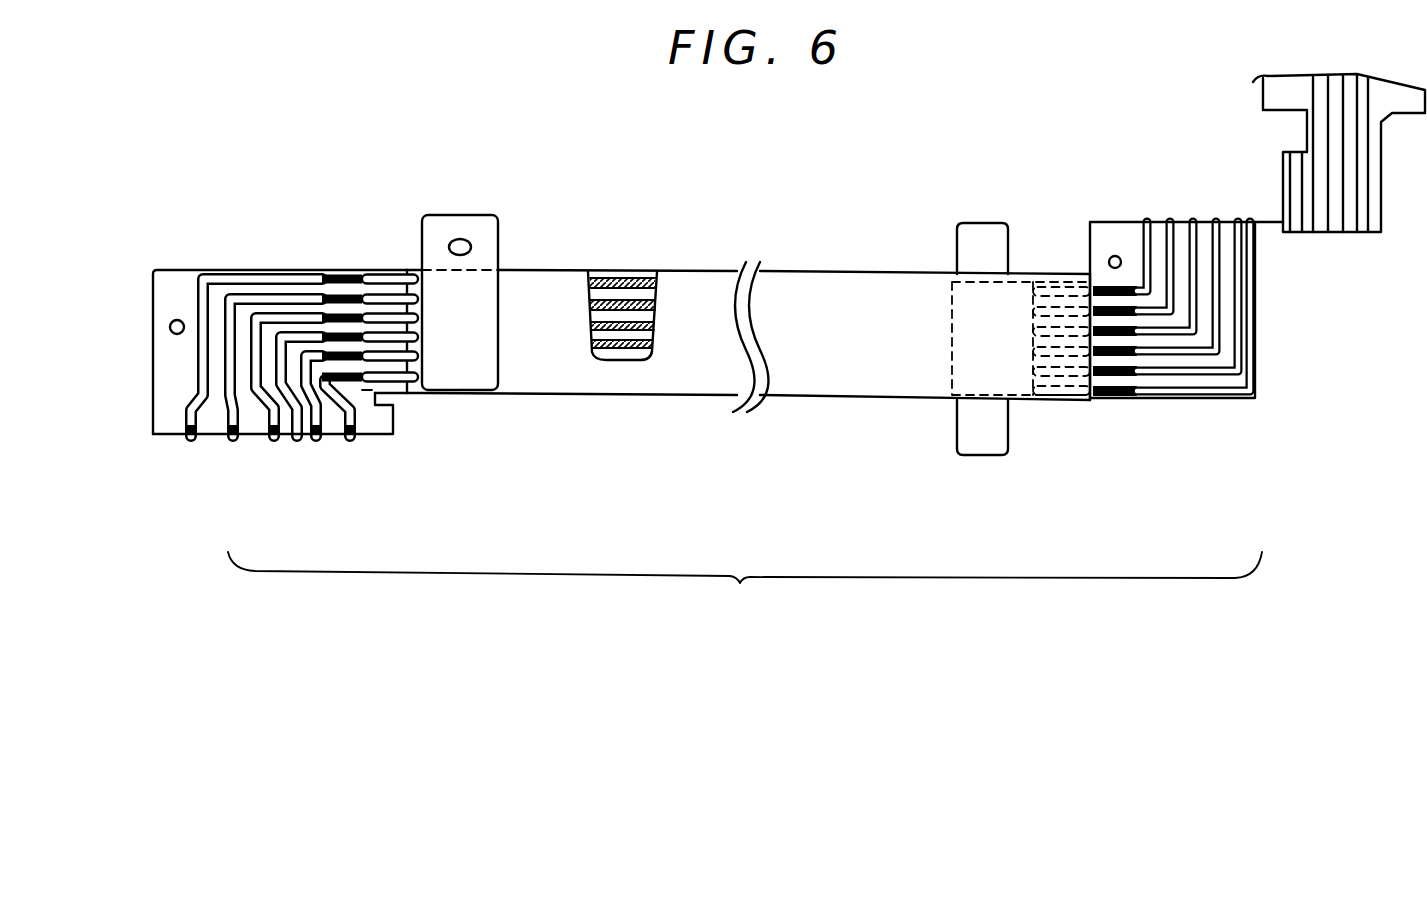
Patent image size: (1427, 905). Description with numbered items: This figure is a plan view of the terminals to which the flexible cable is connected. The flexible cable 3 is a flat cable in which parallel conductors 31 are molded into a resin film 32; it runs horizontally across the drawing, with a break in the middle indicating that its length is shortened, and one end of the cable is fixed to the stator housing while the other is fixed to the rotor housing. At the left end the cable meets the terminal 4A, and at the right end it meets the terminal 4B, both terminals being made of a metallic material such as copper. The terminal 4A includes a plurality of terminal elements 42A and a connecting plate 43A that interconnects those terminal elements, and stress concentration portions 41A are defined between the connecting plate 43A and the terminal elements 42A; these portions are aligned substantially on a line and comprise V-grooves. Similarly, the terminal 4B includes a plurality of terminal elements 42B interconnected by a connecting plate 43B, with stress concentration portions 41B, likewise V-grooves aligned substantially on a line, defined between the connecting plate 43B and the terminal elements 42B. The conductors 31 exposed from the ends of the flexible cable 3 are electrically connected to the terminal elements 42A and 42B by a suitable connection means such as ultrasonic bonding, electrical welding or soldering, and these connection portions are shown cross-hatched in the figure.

The flexible cable 3 is at (687, 405).
The conductors 31 is at (365, 390).
The resin film 32 is at (600, 396).
The terminal 4A is at (280, 348).
The terminal 4B is at (1257, 309).
The stress concentration portion 41A is at (406, 397).
The stress concentration portion 41B is at (1043, 402).
The terminal elements 42A is at (372, 440).
The terminal elements 42B is at (1130, 248).
The connecting plate 43A is at (468, 222).
The connecting plate 43B is at (977, 457).